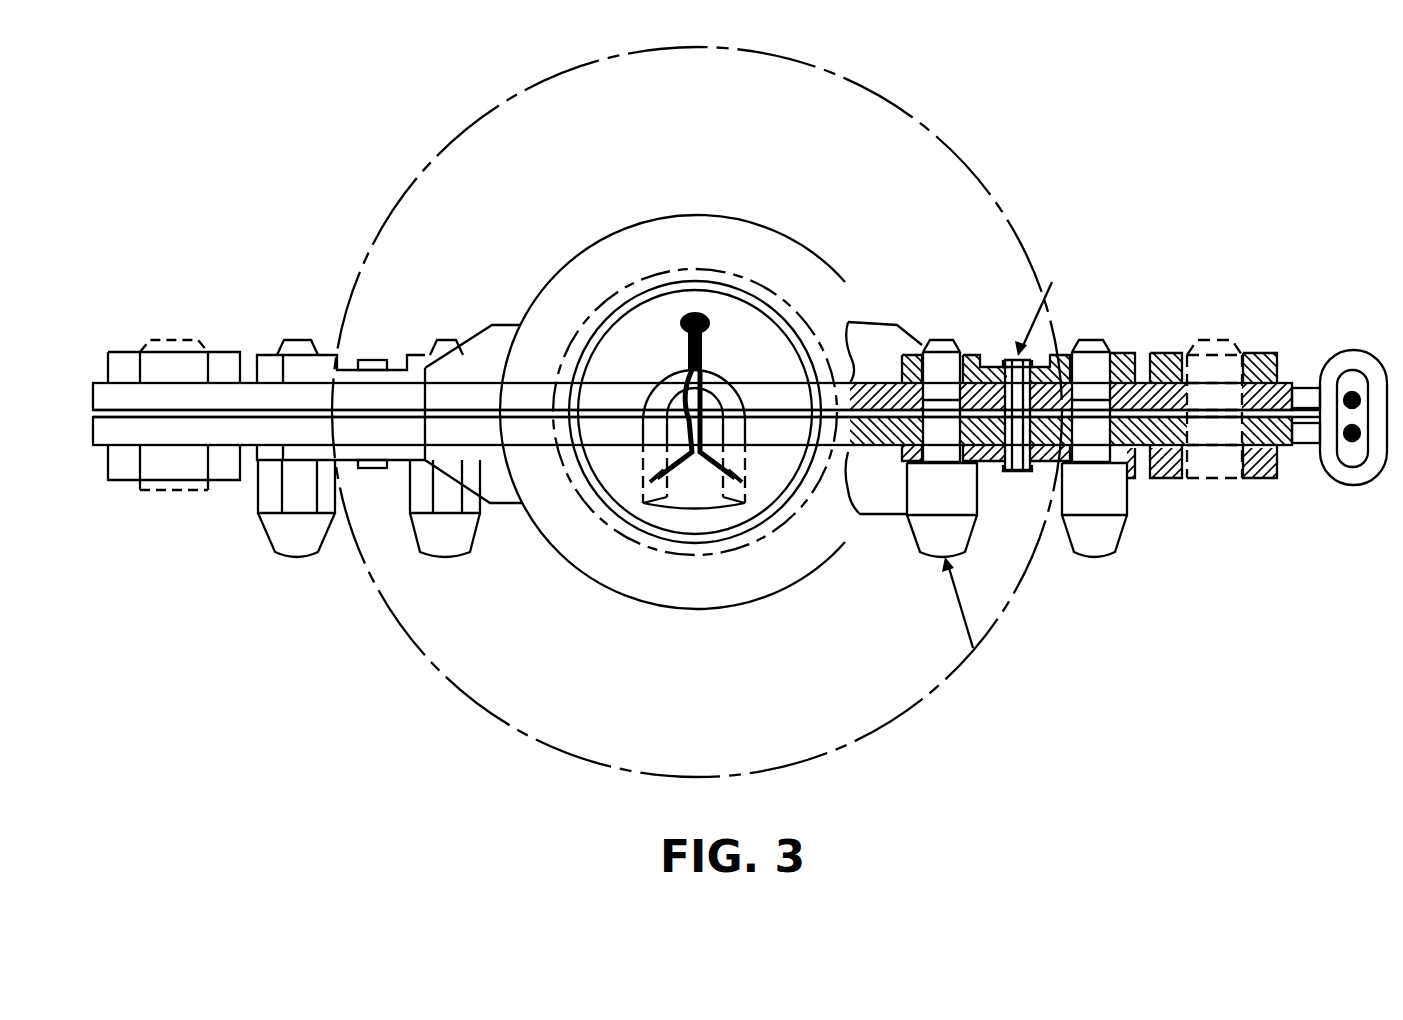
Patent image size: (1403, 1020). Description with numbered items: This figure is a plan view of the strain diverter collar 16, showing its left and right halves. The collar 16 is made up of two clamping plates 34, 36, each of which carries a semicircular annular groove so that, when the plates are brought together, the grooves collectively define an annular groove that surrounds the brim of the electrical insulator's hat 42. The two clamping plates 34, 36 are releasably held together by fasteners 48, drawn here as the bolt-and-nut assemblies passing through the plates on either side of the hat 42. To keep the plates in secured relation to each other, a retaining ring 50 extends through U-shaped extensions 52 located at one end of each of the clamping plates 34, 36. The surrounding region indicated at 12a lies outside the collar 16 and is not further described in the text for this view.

The drum wall 12a is at (990, 227).
The strain diverter collar 16 is at (518, 288).
The hat 42 is at (757, 350).
The clamping plate 36 is at (152, 400).
The clamping plate 34 is at (170, 428).
The fasteners 48 is at (298, 542).
The retaining ring 50 is at (1358, 470).
The U-shaped extensions 52 is at (1300, 400).